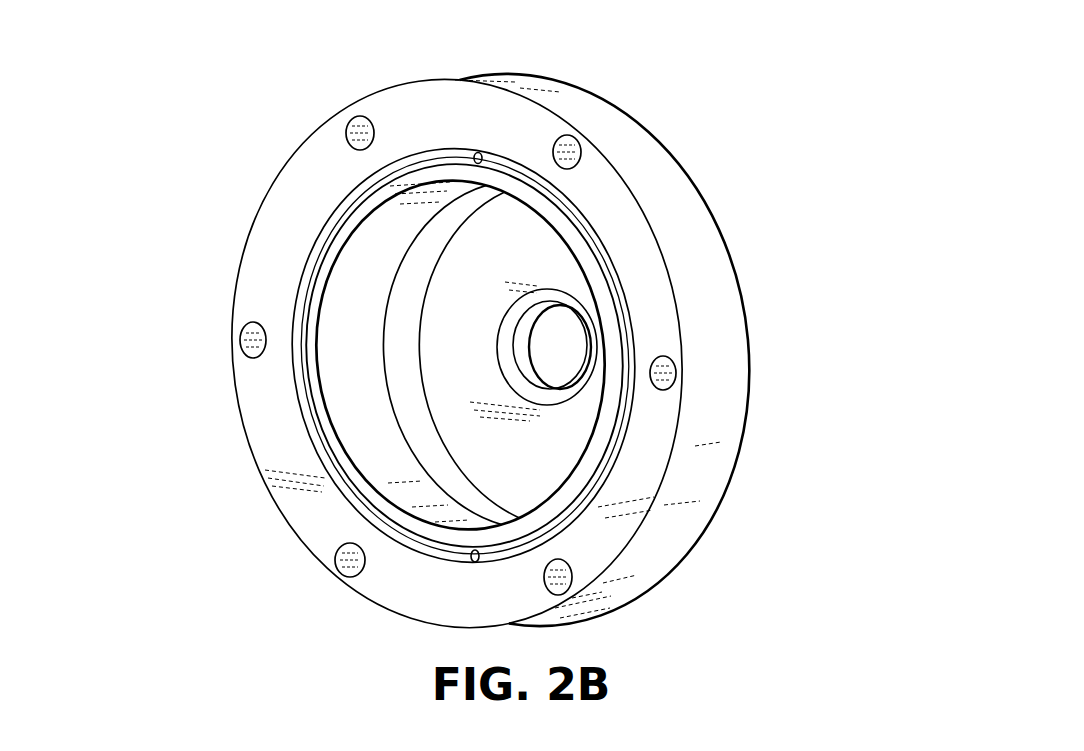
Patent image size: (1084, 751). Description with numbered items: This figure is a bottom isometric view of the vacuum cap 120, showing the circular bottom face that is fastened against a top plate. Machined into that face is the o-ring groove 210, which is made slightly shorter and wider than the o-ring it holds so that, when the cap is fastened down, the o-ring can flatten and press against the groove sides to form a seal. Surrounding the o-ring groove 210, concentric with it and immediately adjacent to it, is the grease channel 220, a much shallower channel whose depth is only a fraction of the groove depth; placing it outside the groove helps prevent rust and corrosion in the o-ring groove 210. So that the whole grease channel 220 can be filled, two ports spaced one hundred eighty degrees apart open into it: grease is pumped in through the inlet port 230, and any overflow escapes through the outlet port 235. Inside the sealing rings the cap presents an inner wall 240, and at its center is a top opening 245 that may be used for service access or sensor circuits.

The vacuum cap 120 is at (284, 78).
The o-ring groove 210 is at (613, 443).
The grease channel 220 is at (538, 537).
The inlet port 230 is at (470, 557).
The outlet port 235 is at (483, 155).
The inner wall 240 is at (350, 310).
The top opening 245 is at (577, 338).